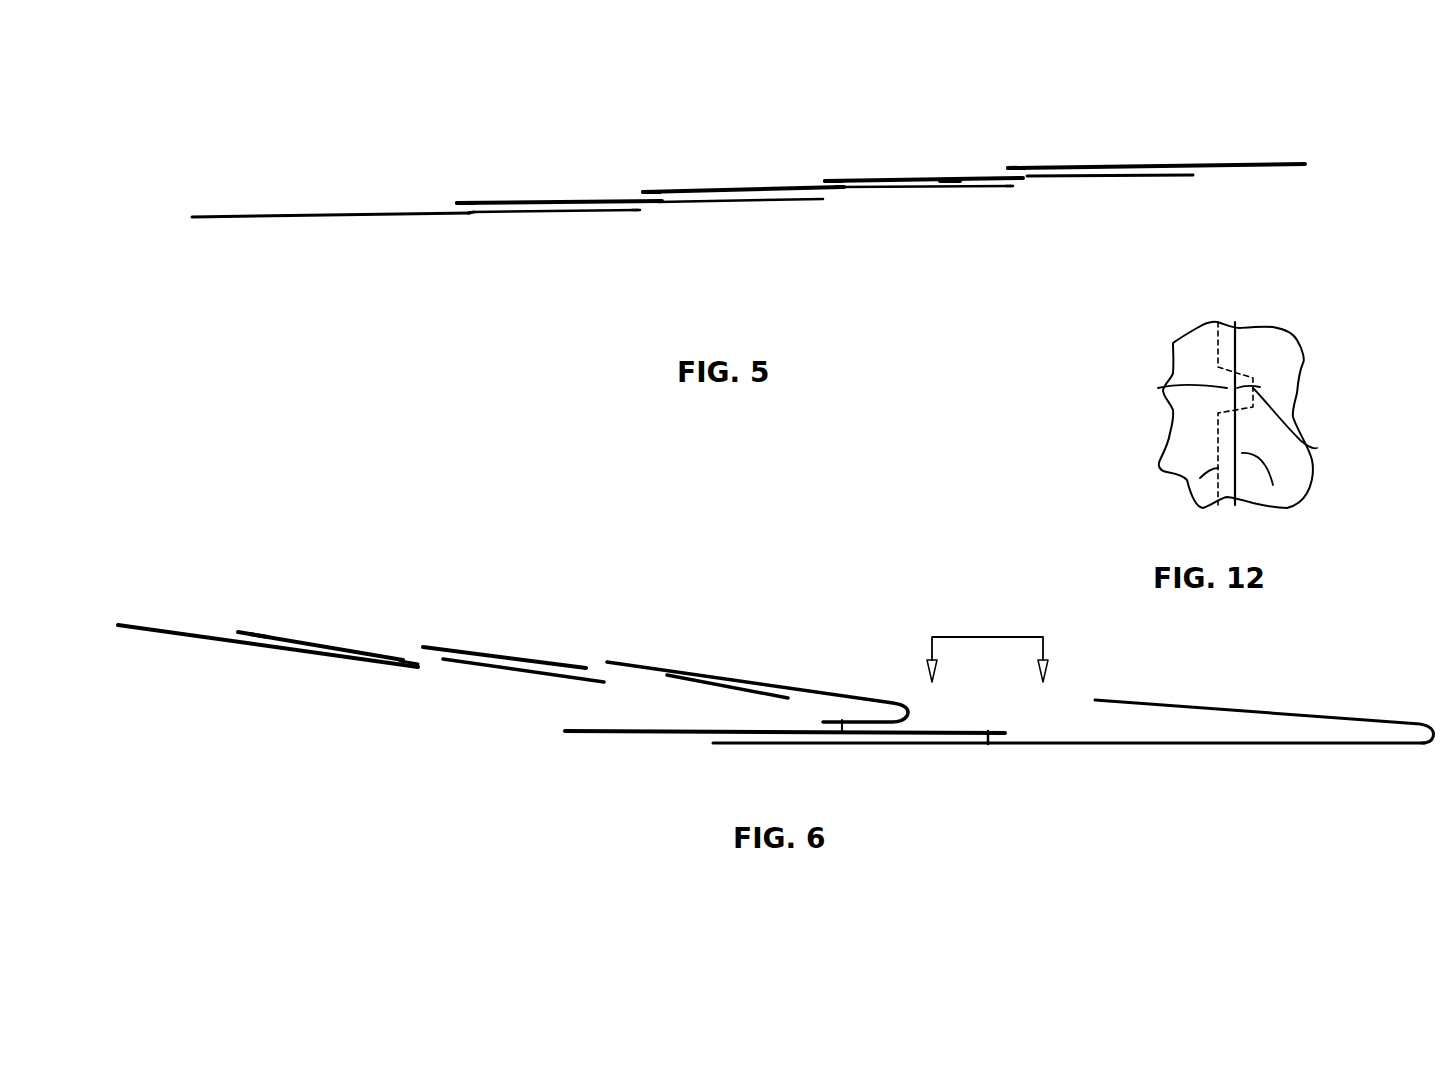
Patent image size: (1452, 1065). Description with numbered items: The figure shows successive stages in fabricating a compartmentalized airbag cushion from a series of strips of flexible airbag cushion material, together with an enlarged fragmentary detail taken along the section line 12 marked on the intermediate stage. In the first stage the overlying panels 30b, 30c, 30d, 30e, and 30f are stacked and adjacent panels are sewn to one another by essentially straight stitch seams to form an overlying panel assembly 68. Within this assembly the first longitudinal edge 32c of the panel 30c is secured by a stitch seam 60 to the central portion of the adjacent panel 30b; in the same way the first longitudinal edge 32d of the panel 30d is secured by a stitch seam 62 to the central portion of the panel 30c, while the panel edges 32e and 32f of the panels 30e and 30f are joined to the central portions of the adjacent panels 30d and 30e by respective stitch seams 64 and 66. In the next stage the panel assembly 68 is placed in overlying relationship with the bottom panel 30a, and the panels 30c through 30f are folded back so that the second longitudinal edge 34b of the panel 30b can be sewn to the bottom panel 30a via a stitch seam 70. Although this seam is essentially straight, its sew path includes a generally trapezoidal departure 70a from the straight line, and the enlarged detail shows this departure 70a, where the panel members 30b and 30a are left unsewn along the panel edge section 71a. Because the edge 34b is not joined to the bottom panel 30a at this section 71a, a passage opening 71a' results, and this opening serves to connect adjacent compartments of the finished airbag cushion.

In FIG. 6, the bottom panel 30a is at (1095, 745).
In FIG. 12, the bottom panel 30a is at (1255, 348).
In FIG. 5, the overlying panel 30b is at (250, 213).
In FIG. 6, the overlying panel 30b is at (590, 734).
In FIG. 12, the overlying panel 30b is at (1192, 360).
In FIG. 5, the overlying panel 30c is at (550, 202).
In FIG. 6, the overlying panel 30c is at (697, 672).
In FIG. 5, the overlying panel 30d is at (737, 187).
In FIG. 6, the overlying panel 30d is at (540, 660).
In FIG. 5, the overlying panel 30e is at (920, 177).
In FIG. 6, the overlying panel 30e is at (448, 663).
In FIG. 5, the overlying panel 30f is at (1105, 167).
In FIG. 6, the overlying panel 30f is at (203, 640).
In FIG. 5, the first longitudinal edge 32c is at (465, 202).
In FIG. 5, the first longitudinal edge 32d is at (652, 192).
In FIG. 5, the first longitudinal edge 32e is at (835, 180).
In FIG. 5, the first longitudinal edge 32f is at (1025, 168).
In FIG. 6, the second longitudinal edge 34b is at (997, 731).
In FIG. 12, the second longitudinal edge 34b is at (1273, 485).
In FIG. 5, the stitch seam 60 is at (475, 212).
In FIG. 5, the stitch seam 62 is at (645, 212).
In FIG. 5, the stitch seam 64 is at (842, 188).
In FIG. 5, the stitch seam 66 is at (1008, 187).
In FIG. 5, the overlying panel assembly 68 is at (948, 146).
In FIG. 6, the overlying panel assembly 68 is at (257, 637).
In FIG. 6, the stitch seam 70 is at (988, 744).
In FIG. 12, the stitch seam 70 is at (1200, 478).
In FIG. 12, the trapezoidal departure 70a is at (1258, 387).
In FIG. 12, the panel edge section 71a is at (1142, 397).
In FIG. 12, the passage opening 71a' is at (1336, 429).
In FIG. 6, the section line 12- 12 is at (969, 664).